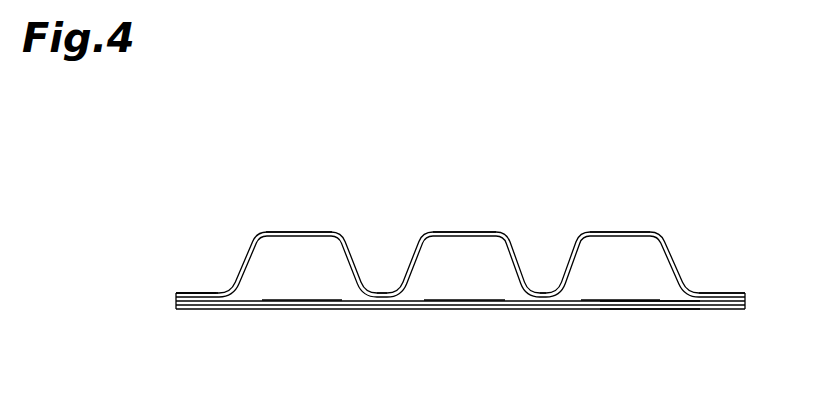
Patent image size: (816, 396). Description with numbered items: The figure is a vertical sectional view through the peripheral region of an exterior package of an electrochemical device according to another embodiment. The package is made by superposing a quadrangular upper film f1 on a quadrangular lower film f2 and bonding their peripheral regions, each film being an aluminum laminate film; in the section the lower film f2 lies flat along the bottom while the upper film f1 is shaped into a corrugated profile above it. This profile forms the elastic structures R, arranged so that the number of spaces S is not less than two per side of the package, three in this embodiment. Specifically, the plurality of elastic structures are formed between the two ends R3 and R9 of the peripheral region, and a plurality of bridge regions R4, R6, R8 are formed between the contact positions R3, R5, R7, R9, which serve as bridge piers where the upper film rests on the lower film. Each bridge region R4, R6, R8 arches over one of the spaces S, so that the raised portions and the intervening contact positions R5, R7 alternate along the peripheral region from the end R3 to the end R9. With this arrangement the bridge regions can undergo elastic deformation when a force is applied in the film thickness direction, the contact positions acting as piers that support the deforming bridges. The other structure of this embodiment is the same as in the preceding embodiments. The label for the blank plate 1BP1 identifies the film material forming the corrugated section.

The blank plate (first blank plate, second blank plate 1BP2) 1BP1 is at (268, 299).
The elastic structure R is at (550, 135).
The end (contact position) R3 is at (183, 292).
The bridge region R4 is at (313, 231).
The contact position R5 is at (381, 292).
The bridge region R6 is at (460, 232).
The contact position R7 is at (538, 292).
The bridge region R8 is at (627, 232).
The end (contact position) R9 is at (722, 292).
The upper film f1 is at (680, 270).
The lower film f2 is at (657, 235).
The space S is at (461, 279).